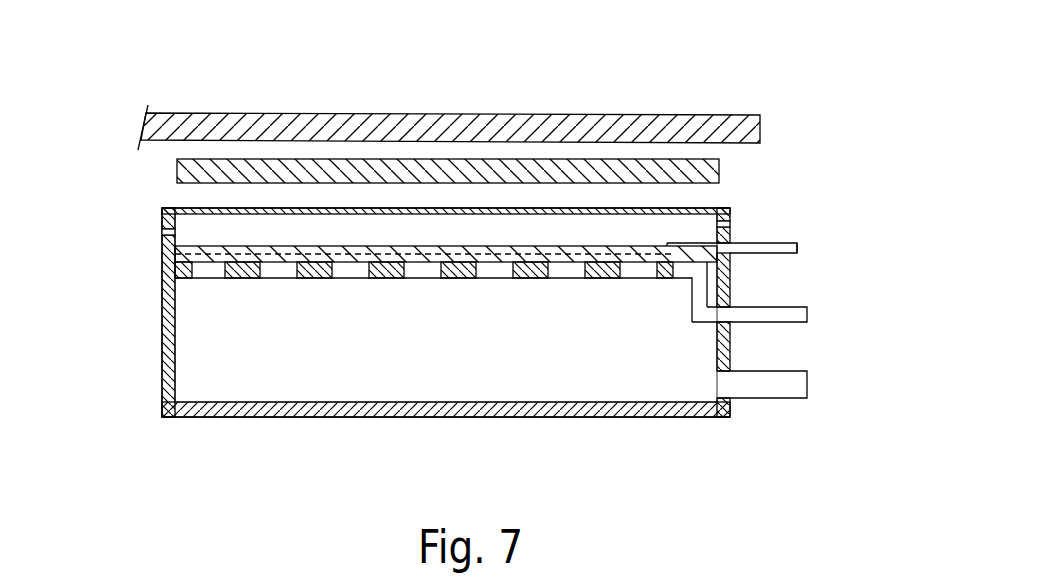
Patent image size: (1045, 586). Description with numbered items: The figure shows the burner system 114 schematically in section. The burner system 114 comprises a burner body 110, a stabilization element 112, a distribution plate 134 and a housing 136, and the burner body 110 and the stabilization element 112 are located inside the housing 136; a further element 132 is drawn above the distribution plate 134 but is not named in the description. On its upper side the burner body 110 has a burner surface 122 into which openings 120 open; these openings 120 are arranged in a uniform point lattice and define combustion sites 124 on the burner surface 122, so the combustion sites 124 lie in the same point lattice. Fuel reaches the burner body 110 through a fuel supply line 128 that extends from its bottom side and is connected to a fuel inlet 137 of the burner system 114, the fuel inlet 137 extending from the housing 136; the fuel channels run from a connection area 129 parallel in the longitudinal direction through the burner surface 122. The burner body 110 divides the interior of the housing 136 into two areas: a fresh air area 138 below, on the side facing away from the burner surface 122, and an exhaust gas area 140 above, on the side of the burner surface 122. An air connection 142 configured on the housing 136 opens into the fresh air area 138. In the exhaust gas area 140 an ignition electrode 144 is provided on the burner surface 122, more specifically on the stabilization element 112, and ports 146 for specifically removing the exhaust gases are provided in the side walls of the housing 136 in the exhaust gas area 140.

The burner body 110 is at (609, 258).
The stabilization element 112 is at (648, 252).
The burner system 114 is at (148, 387).
The openings 120 is at (424, 385).
The burner surface 122 is at (197, 218).
The combustion sites 124 is at (420, 483).
The fuel supply line 128 is at (705, 323).
The connection area 129 is at (733, 271).
The cover plate 132 is at (650, 113).
The distribution plate 134 is at (722, 173).
The housing 136 is at (270, 418).
The fuel inlet 137 is at (805, 312).
The fresh air area 138 is at (190, 350).
The exhaust gas area 140 is at (175, 248).
The air connection 142 is at (793, 385).
The ignition electrode 144 is at (748, 240).
The ports 146 is at (163, 232).